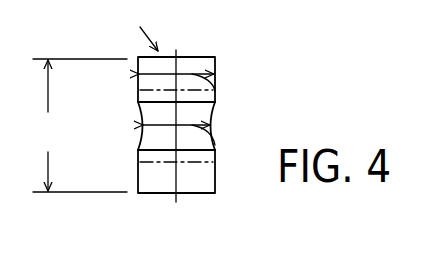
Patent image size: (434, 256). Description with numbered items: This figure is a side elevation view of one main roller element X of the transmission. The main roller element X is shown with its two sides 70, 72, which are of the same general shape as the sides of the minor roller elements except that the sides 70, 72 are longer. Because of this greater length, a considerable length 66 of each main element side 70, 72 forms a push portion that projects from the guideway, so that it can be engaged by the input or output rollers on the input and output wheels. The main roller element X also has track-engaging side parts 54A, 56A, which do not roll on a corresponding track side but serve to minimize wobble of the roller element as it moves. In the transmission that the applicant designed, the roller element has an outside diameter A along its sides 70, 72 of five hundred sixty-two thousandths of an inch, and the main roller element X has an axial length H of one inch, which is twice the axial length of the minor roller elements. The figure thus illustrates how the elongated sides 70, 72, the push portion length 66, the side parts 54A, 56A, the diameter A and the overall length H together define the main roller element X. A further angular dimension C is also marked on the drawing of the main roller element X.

The side of main roller element 72 is at (217, 60).
The side of main roller element 70 is at (217, 187).
The track-engaging side part 56A is at (137, 98).
The track-engaging side part 54A is at (137, 157).
The length of push portion 66 is at (137, 180).
The outside diameter A is at (215, 90).
The taper angle C is at (215, 145).
The main roller element X is at (139, 31).
The axial length of main roller element H is at (80, 125).